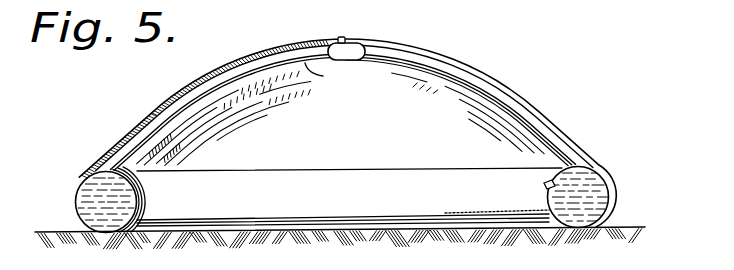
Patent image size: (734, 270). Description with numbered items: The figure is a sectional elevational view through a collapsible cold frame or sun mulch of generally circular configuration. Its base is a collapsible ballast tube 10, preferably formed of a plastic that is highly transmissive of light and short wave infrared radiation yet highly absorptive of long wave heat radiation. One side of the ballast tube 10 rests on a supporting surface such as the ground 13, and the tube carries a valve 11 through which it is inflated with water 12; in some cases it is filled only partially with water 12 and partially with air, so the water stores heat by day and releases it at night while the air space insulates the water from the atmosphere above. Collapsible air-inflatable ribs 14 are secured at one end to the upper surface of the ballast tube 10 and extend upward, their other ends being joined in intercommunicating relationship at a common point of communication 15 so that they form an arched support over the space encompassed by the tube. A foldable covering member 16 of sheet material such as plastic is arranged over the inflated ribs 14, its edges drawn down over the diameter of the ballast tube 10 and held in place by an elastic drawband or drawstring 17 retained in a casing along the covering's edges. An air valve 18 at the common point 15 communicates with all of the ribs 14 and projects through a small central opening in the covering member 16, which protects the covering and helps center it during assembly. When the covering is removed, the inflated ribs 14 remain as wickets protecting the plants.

The collapsible ballast tube 10 is at (451, 172).
The valve 11 is at (545, 186).
The water 12 is at (588, 190).
The ground 13 is at (620, 229).
The collapsible air-inflatable ribs 14 is at (378, 61).
The common point of communication 15 is at (352, 48).
The foldable covering member 16 is at (128, 128).
The elastic drawband or drawstring 17 is at (82, 227).
The air valve 18 is at (343, 37).